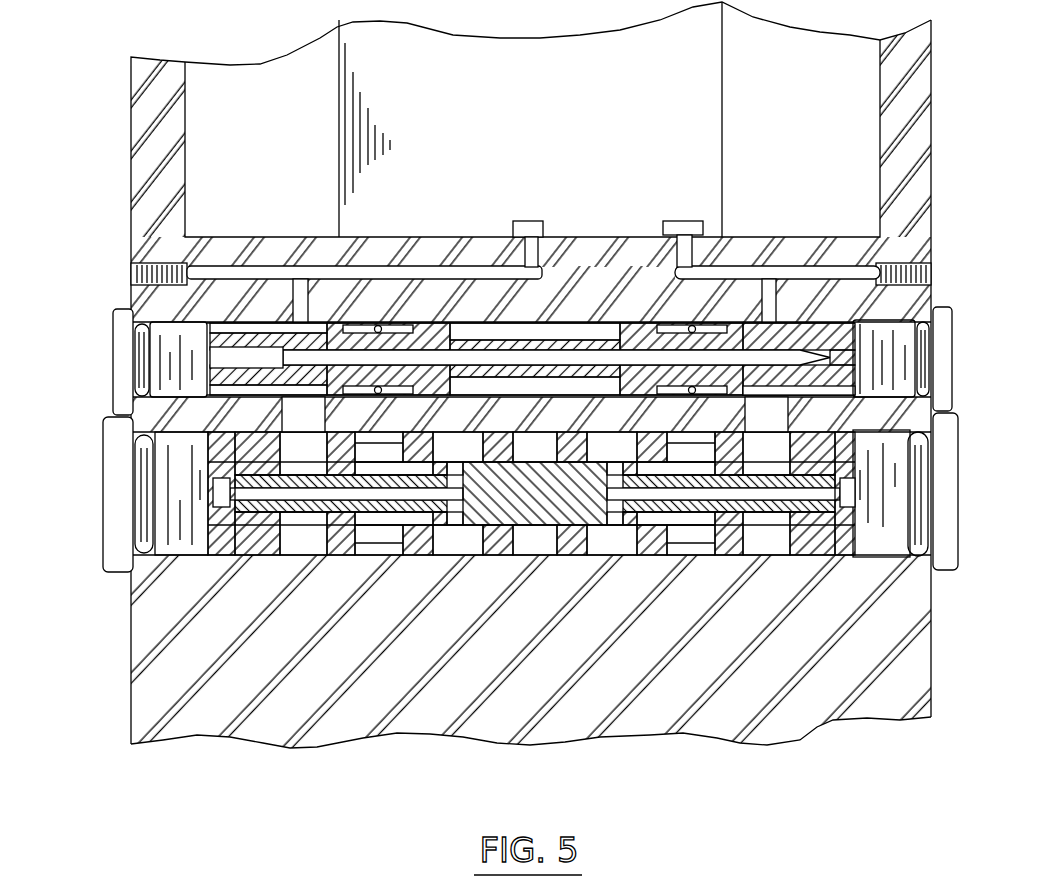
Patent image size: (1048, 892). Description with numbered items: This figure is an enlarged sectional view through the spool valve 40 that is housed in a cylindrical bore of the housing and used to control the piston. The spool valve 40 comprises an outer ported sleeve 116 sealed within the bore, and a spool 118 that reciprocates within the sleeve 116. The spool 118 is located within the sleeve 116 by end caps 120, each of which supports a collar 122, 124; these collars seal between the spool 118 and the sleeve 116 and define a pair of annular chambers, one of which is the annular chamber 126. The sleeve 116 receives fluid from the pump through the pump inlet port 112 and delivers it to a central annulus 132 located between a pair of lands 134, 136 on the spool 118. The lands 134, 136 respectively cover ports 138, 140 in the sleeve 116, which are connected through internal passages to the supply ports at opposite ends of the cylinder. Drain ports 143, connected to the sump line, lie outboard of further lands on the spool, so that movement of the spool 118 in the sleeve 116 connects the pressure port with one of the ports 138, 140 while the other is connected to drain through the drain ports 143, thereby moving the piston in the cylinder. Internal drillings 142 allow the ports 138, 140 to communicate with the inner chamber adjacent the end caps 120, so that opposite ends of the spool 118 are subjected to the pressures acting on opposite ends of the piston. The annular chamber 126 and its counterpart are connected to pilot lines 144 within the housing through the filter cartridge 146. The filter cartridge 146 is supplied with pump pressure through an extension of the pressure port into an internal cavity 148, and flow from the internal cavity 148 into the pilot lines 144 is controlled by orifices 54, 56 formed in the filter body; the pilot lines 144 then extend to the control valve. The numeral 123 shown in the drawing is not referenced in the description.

The spool valve 40 is at (966, 580).
The orifice 54 is at (62, 322).
The orifice 56 is at (931, 287).
The pump inlet port 112 is at (520, 557).
The outer ported sleeve 116 is at (529, 556).
The spool 118 is at (334, 520).
The end caps 120 is at (895, 462).
The collar 122 is at (212, 558).
The retaining ring 123 is at (790, 550).
The collar 124 is at (841, 545).
The annular chamber 126 is at (300, 520).
The central annulus 132 is at (527, 463).
The land 134 is at (462, 548).
The land 136 is at (628, 556).
The port 138 is at (476, 550).
The port 140 is at (610, 556).
The internal drillings 142 is at (230, 490).
The drain ports 143 is at (370, 550).
The pilot lines 144 is at (294, 303).
The filter cartridge 146 is at (845, 362).
The internal cavity 148 is at (580, 322).